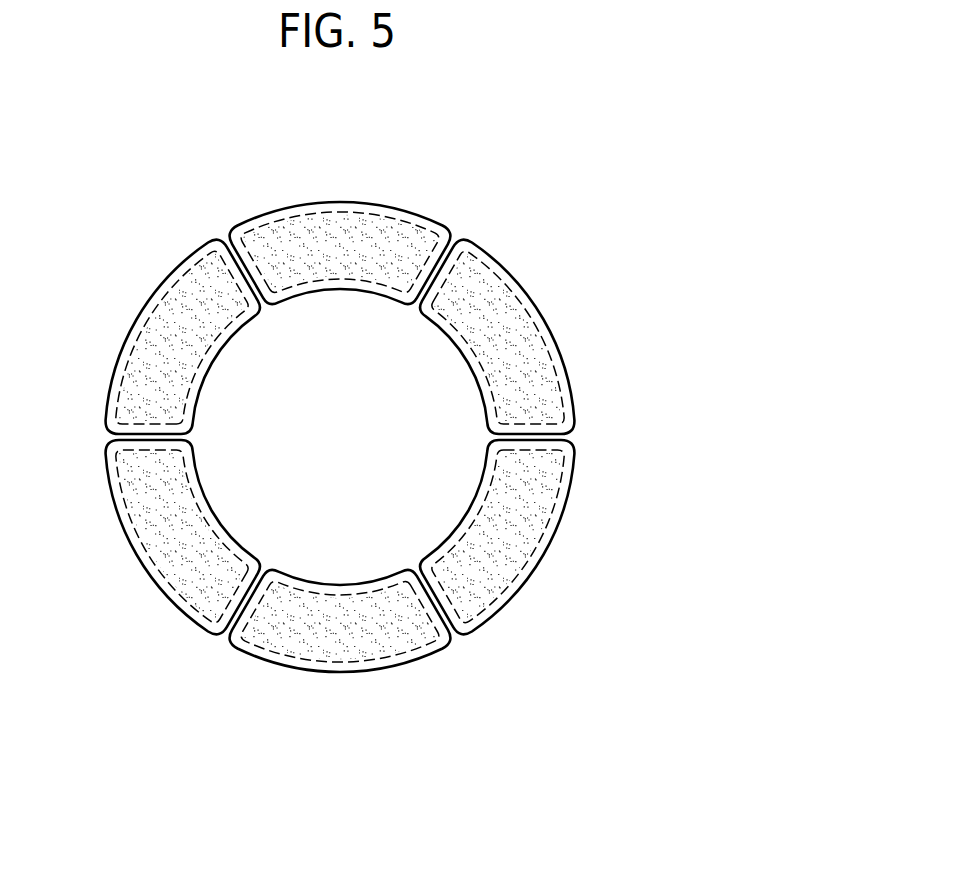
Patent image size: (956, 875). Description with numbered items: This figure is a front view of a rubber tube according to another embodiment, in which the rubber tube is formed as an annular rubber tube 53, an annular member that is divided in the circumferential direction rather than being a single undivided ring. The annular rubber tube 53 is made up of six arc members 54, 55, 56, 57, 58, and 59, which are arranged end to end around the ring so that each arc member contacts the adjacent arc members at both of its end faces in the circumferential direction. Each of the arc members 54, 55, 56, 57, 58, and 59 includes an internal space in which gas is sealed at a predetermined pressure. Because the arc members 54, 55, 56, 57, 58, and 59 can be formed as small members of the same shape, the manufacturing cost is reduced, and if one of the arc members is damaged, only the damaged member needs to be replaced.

The annular rubber tube 53 is at (580, 164).
The arc member 54 is at (333, 223).
The arc member 55 is at (518, 327).
The arc member 56 is at (523, 541).
The arc member 57 is at (342, 645).
The arc member 58 is at (158, 543).
The arc member 59 is at (157, 332).